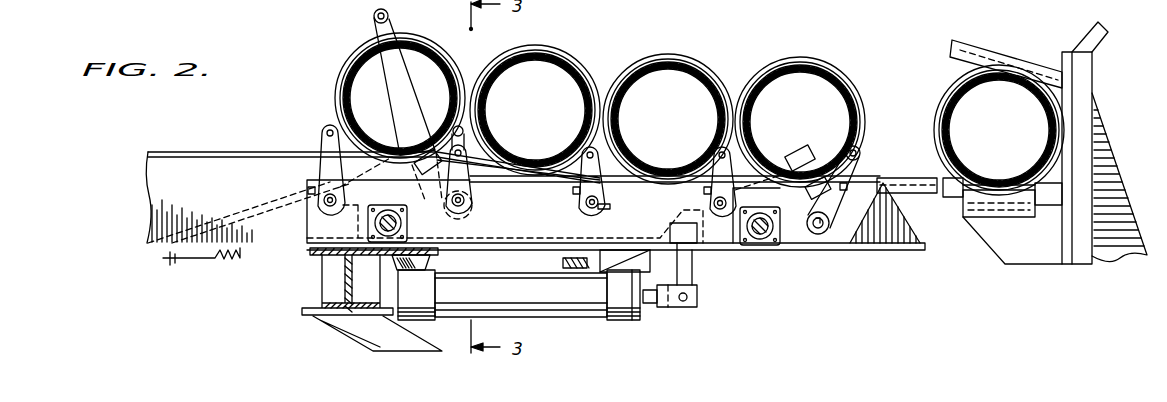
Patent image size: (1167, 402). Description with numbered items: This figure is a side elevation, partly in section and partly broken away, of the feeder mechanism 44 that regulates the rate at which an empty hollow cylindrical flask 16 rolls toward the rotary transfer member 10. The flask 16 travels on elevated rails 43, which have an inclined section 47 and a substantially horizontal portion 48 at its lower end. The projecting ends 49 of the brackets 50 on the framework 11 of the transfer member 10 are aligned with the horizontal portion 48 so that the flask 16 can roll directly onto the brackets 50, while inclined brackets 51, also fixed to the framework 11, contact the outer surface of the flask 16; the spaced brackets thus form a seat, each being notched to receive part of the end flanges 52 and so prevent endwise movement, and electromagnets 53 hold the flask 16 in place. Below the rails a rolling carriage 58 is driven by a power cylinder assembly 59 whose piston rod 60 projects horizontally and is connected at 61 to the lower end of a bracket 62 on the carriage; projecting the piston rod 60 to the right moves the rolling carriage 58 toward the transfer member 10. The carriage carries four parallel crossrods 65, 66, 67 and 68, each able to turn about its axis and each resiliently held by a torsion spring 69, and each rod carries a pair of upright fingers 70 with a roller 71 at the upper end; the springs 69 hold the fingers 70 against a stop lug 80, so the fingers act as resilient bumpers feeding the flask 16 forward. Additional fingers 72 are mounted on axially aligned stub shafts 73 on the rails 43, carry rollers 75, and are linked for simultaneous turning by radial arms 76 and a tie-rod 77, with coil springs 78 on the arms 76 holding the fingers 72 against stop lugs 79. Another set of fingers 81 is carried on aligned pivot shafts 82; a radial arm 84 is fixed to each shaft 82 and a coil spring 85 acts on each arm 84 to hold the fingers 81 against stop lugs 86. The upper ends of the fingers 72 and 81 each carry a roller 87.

The rotary transfer member 10 is at (1092, 70).
The framework 11 is at (1085, 242).
The hollow cylindrical flask 16 is at (350, 80).
The rails 43 is at (186, 172).
The feeder mechanism 44 is at (698, 48).
The inclined section 47 is at (470, 165).
The horizontal portion 48 is at (605, 207).
The projecting ends 49 is at (950, 192).
The brackets 50 is at (1058, 200).
The inclined brackets 51 is at (978, 42).
The end flanges 52 is at (628, 70).
The electromagnets 53 is at (1022, 212).
The rolling carriage 58 is at (697, 263).
The power cylinder assembly 59 is at (570, 318).
The piston rod 60 is at (652, 306).
The connection 61 is at (683, 301).
The bracket 62 is at (693, 283).
The crossrod 65 is at (333, 212).
The crossrod 66 is at (462, 210).
The crossrod 67 is at (592, 213).
The crossrod 68 is at (710, 214).
The torsion spring 69 is at (480, 207).
The upright fingers 70 is at (320, 168).
The roller 71 is at (325, 130).
The fingers 72 is at (436, 150).
The stub shafts 73 is at (480, 250).
The rollers 75 is at (461, 132).
The radial arms 76 is at (393, 26).
The tie-rod 77 is at (374, 16).
The coil springs 78 is at (222, 257).
The stop lugs 79 is at (417, 166).
The stop lug 80 is at (306, 190).
The fingers 81 is at (822, 183).
The pivot shafts 82 is at (824, 240).
The radial arm 84 is at (790, 200).
The coil spring 85 is at (715, 246).
The stop lugs 86 is at (836, 200).
The roller 87 is at (862, 153).